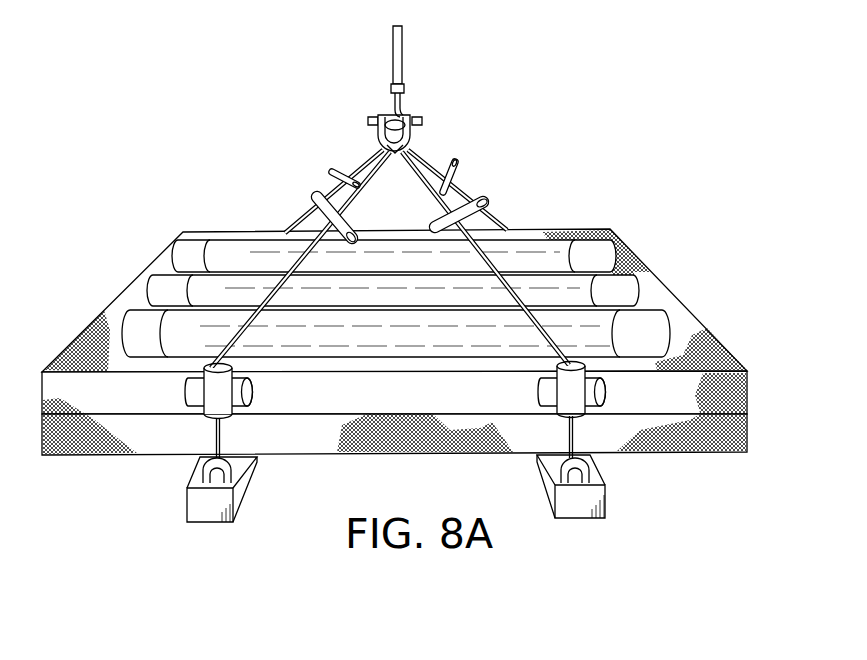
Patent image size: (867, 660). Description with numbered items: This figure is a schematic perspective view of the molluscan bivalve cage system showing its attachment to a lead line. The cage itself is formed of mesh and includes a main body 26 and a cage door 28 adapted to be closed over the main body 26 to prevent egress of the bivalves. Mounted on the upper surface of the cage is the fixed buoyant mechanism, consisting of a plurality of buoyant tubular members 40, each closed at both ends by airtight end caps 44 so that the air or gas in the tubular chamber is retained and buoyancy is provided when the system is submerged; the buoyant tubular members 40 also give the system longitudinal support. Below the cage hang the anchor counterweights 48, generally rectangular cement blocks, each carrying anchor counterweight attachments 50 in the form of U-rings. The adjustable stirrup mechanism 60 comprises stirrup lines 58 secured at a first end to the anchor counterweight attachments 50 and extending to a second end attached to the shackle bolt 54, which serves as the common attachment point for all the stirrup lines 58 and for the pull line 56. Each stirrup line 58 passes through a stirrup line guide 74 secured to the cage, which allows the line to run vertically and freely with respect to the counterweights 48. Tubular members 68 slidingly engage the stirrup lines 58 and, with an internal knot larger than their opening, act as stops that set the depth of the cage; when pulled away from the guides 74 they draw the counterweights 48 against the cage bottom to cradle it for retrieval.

The main body 26 is at (747, 430).
The cage door 28 is at (747, 393).
The buoyant tubular member 40 is at (415, 268).
The end cap 44 is at (587, 243).
The anchor counterweight 48 is at (212, 523).
The anchor counterweight attachment 50 is at (231, 468).
The shackle bolt 54 is at (417, 137).
The pull line 56 is at (403, 45).
The stirrup line 58 is at (272, 283).
The adjustable stirrup mechanism 60 is at (414, 197).
The tubular member 68 is at (353, 218).
The stirrup line guide 74 is at (186, 396).